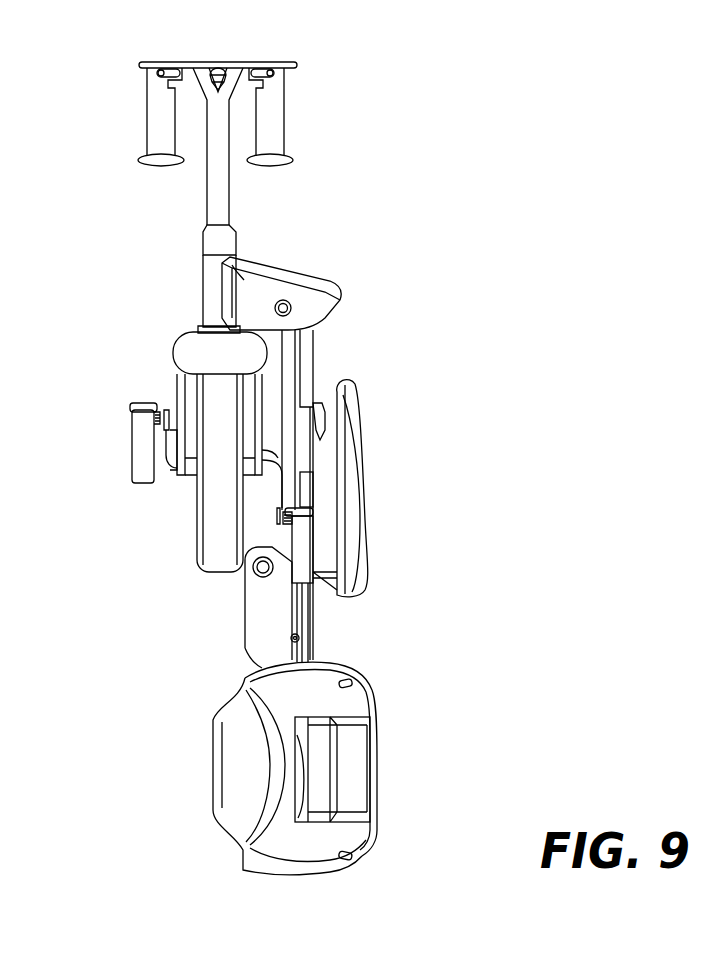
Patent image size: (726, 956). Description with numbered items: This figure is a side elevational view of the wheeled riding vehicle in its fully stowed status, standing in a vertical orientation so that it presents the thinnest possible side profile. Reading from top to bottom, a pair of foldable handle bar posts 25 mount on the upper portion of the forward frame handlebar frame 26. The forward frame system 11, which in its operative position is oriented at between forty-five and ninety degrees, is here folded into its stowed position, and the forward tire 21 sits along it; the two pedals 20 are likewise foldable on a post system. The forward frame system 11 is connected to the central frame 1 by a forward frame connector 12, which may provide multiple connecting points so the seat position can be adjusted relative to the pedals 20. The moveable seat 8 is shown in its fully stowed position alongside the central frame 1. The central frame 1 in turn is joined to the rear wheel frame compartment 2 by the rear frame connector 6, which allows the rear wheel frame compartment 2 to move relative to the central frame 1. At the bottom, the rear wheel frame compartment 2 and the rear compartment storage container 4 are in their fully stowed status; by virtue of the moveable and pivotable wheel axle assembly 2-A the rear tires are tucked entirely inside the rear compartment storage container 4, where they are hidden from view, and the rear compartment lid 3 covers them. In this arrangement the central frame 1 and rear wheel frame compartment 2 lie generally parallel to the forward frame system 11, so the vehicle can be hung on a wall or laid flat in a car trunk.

The central frame 1 is at (308, 373).
The rear wheel frame compartment 2 is at (320, 690).
The moveable and pivotable wheel axle assembly 2-A is at (330, 795).
The rear compartment lid 3 is at (380, 757).
The rear compartment storage container 4 is at (298, 840).
The rear frame connector 6 is at (256, 618).
The moveable seat 8 is at (354, 486).
The forward frame system 11 is at (234, 243).
The forward frame connector 12 is at (307, 290).
The pedal 20 is at (140, 445).
The forward tire 21 is at (215, 544).
The handle bar posts 25 is at (153, 122).
The forward frame handlebar frame 26 is at (220, 66).